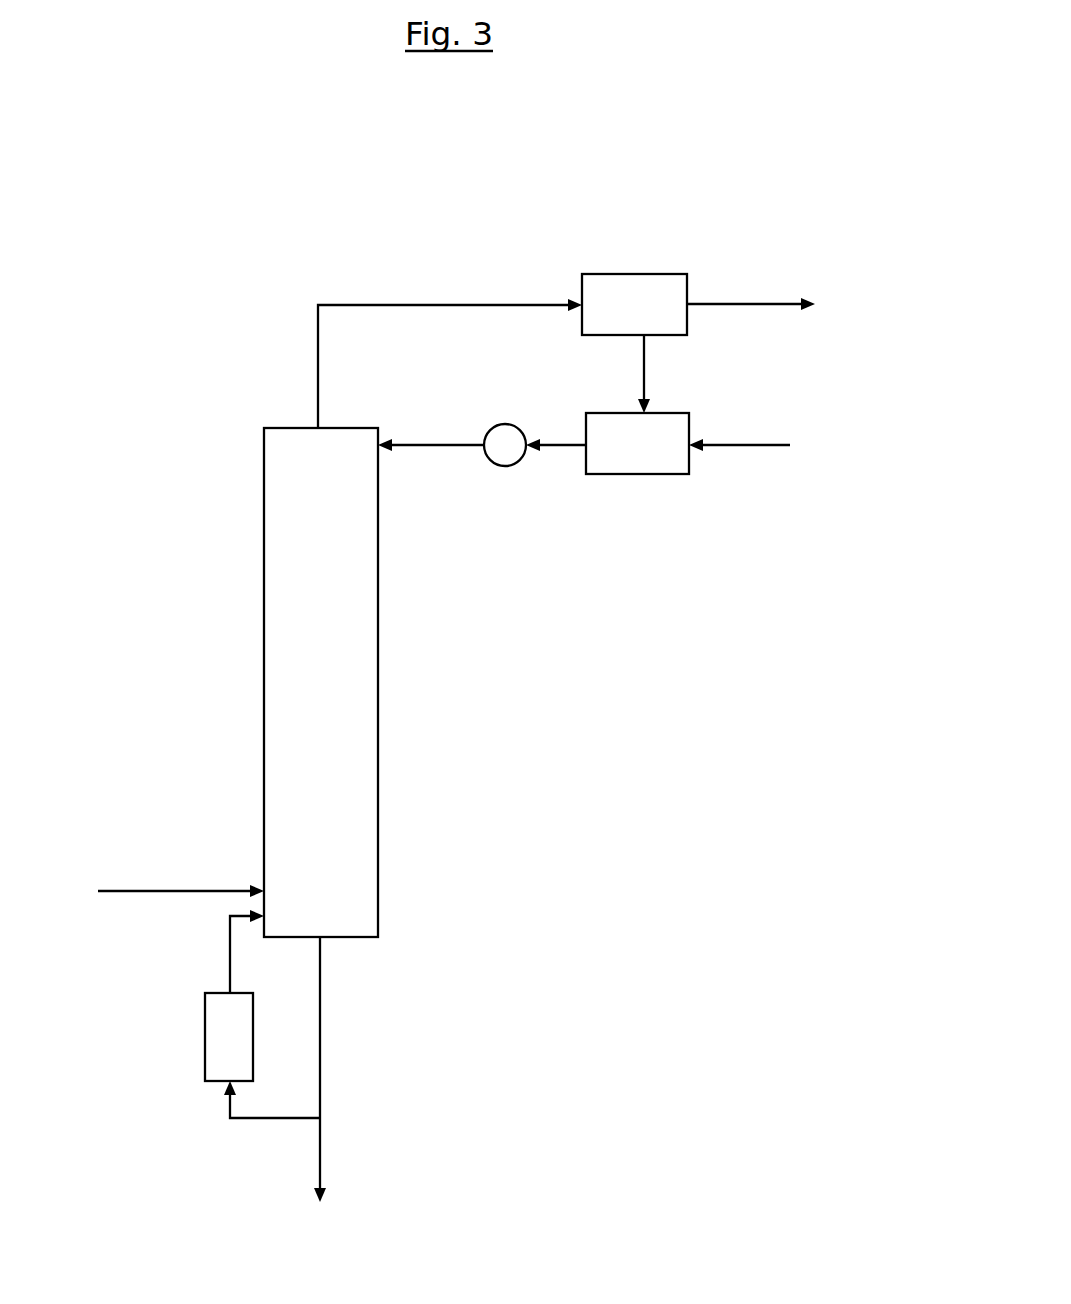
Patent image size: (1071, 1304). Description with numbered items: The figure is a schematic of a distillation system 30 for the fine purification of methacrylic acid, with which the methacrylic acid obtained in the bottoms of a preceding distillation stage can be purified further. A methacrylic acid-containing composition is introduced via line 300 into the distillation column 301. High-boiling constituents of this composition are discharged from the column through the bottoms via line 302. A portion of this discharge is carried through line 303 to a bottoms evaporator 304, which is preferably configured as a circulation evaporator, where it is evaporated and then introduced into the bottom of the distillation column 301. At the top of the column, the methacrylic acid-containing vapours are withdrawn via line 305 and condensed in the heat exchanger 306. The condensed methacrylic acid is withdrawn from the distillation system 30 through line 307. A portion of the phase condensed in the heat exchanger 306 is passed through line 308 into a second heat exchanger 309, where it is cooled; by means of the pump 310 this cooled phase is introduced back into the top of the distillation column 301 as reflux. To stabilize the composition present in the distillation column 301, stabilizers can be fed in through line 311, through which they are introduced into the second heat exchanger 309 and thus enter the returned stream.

The distillation system 30 is at (142, 167).
The line 300 is at (187, 887).
The distillation column 301 is at (287, 667).
The line 302 is at (320, 1002).
The line 303 is at (282, 1120).
The bottoms evaporator 304 is at (224, 1051).
The line 305 is at (465, 302).
The heat exchanger 306 is at (648, 303).
The line 307 is at (743, 304).
The line 308 is at (643, 375).
The second heat exchanger 309 is at (627, 447).
The pump 310 is at (505, 450).
The line 311 is at (752, 445).